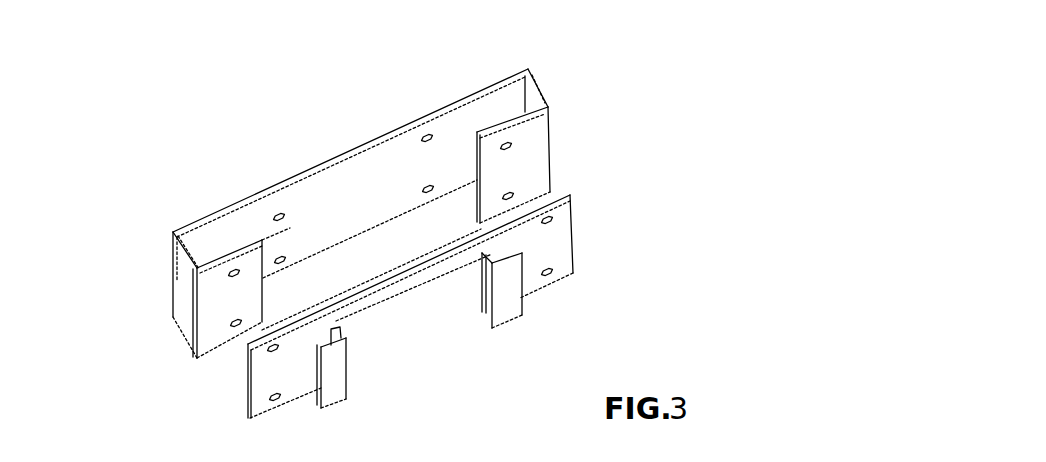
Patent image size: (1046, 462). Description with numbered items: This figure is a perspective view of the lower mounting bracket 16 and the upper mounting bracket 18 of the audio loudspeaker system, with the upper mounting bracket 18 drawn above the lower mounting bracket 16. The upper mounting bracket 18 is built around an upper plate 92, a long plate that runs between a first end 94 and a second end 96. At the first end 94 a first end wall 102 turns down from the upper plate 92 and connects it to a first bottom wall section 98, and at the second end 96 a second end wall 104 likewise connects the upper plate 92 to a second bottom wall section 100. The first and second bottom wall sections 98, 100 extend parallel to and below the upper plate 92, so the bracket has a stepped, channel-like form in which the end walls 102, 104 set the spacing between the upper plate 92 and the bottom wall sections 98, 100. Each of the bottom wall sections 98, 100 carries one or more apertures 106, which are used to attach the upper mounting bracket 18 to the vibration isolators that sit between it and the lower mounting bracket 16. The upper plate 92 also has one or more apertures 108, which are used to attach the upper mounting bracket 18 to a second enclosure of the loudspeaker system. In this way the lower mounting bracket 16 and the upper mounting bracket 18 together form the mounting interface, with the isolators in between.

The lower mounting bracket 16 is at (588, 262).
The upper mounting bracket 18 is at (563, 105).
The upper plate 92 is at (268, 183).
The first end 94 is at (173, 237).
The second end 96 is at (530, 68).
The first bottom wall section 98 is at (215, 318).
The second bottom wall section 100 is at (525, 163).
The first end wall 102 is at (180, 276).
The second end wall 104 is at (525, 102).
The apertures 106 is at (233, 272).
The apertures 108 is at (420, 140).